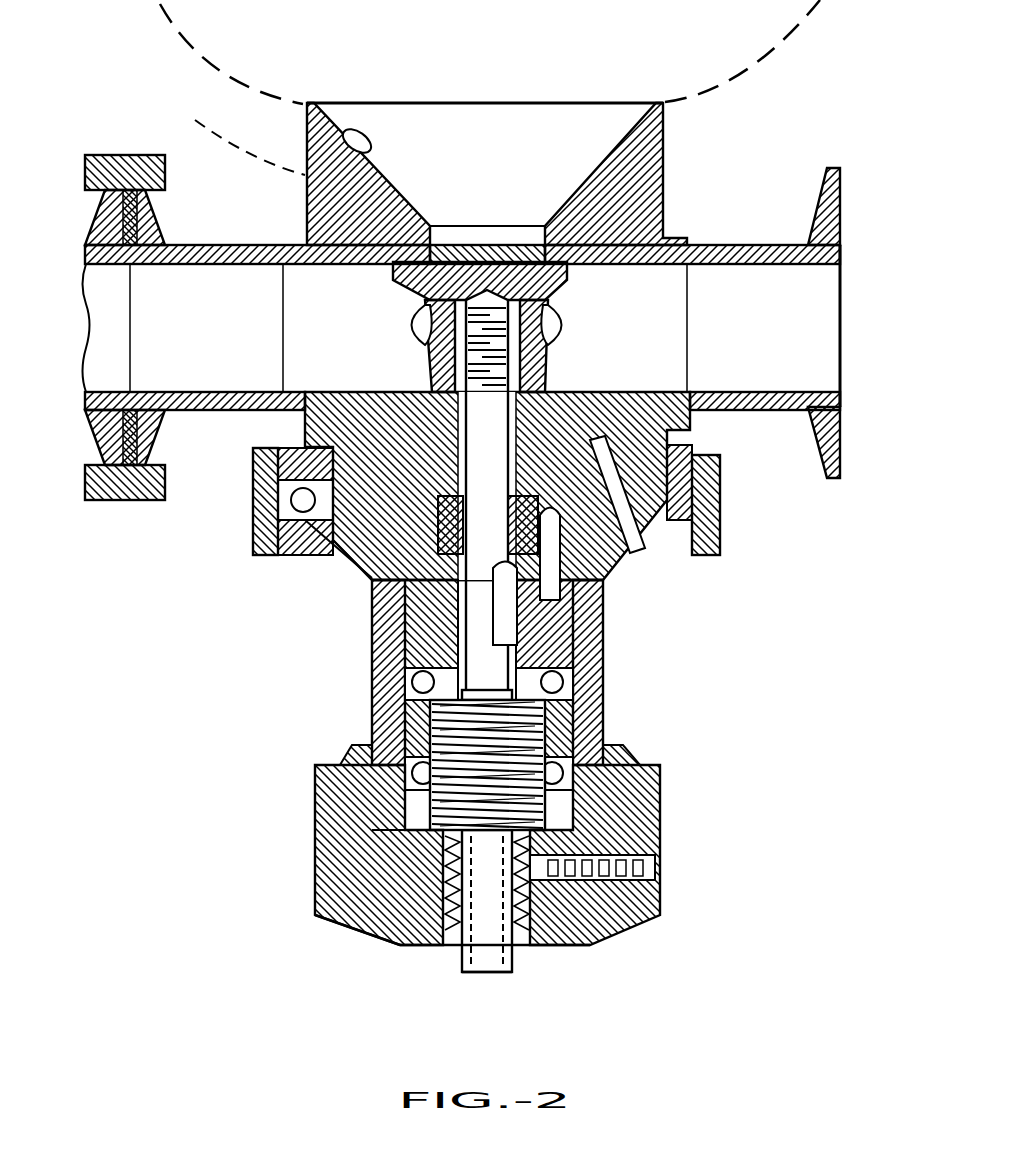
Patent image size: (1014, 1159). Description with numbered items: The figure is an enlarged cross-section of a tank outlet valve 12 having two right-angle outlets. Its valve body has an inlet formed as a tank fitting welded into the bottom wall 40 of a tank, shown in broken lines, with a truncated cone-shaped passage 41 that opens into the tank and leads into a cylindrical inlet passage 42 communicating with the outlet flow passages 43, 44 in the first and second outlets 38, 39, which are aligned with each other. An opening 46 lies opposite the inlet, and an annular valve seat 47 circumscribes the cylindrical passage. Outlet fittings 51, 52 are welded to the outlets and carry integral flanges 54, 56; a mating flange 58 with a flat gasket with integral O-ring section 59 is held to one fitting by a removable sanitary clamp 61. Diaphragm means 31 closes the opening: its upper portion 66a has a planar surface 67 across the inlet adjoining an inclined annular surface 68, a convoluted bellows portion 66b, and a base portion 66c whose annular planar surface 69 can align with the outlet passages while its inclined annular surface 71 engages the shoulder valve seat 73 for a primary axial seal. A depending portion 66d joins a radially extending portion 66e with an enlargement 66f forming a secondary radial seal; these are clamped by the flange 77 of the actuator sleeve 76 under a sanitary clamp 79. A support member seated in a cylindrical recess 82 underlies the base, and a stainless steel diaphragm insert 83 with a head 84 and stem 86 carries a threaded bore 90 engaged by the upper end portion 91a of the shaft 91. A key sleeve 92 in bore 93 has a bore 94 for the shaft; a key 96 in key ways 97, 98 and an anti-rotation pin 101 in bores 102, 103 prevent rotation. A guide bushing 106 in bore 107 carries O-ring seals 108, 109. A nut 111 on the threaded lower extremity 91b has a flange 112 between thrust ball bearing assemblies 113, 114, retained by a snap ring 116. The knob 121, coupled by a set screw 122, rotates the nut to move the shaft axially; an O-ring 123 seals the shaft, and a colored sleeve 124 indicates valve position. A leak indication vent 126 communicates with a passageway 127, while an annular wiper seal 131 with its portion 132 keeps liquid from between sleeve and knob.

The tank outlet valve 12 is at (195, 168).
The diaphragm means 31 is at (318, 430).
The first outlet 38 is at (686, 245).
The second outlet 39 is at (300, 245).
The bottom wall 40 is at (178, 120).
The truncated cone-shaped passage 41 is at (307, 130).
The cylindrical inlet passage 42 is at (307, 187).
The outlet flow passage 43 is at (690, 380).
The outlet flow passage 44 is at (300, 400).
The opening 46 is at (278, 503).
The annular valve seat 47 is at (668, 205).
The outlet fitting 51 is at (770, 245).
The outlet fitting 52 is at (205, 247).
The flange 54 is at (825, 210).
The flange 56 is at (140, 205).
The mating flange 58 is at (102, 432).
The flat gasket with integral O-ring section 59 is at (108, 489).
The sanitary clamp 61 is at (118, 505).
The upper portion 66a is at (497, 245).
The bellows portion 66b is at (527, 308).
The base portion 66c is at (590, 395).
The portion 66d is at (745, 400).
The radially extending portion 66e is at (640, 535).
The enlargement 66f is at (692, 470).
The planar surface 67 is at (463, 245).
The inclined annular surface 68 is at (668, 198).
The annular planar surface 69 is at (400, 392).
The inclined annular surface 71 is at (655, 395).
The shoulder valve seat 73 is at (693, 372).
The actuator sleeve 76 is at (607, 690).
The flange 77 is at (280, 527).
The sanitary clamp 79 is at (712, 522).
The cylindrical recess 82 is at (332, 465).
The diaphragm insert 83 is at (518, 333).
The head 84 is at (555, 290).
The stem 86 is at (517, 342).
The threaded bore 90 is at (425, 300).
The shaft 91 is at (372, 660).
The upper end portion 91a is at (450, 322).
The threaded lower extremity 91b is at (460, 815).
The key sleeve 92 is at (395, 590).
The bore 93 is at (375, 612).
The bore 94 is at (380, 630).
The key 96 is at (498, 630).
The key way 97 is at (480, 580).
The key way 98 is at (605, 672).
The anti-rotation pin 101 is at (604, 640).
The bore 102 is at (607, 612).
The bore 103 is at (600, 578).
The guide bushing 106 is at (340, 545).
The bore 107 is at (275, 542).
The O-ring seal 108 is at (400, 580).
The O-ring seal 109 is at (463, 500).
The nut 111 is at (455, 880).
The flange 112 is at (405, 727).
The thrust ball bearing assembly 113 is at (405, 690).
The thrust ball bearing assembly 114 is at (353, 798).
The snap ring 116 is at (345, 832).
The knob 121 is at (318, 912).
The set screw 122 is at (662, 866).
The O-ring 123 is at (522, 948).
The sleeve 124 is at (518, 965).
The leak indication vent 126 is at (655, 550).
The passageway 127 is at (700, 445).
The annular wiper seal 131 is at (623, 745).
The portion 132 is at (660, 770).